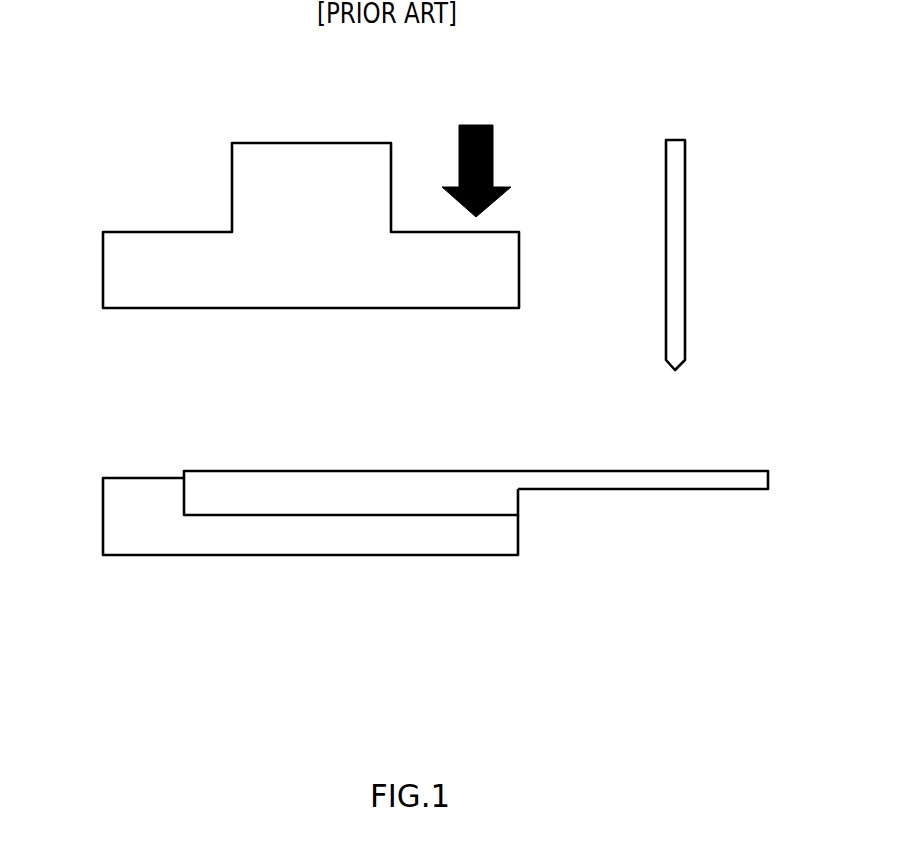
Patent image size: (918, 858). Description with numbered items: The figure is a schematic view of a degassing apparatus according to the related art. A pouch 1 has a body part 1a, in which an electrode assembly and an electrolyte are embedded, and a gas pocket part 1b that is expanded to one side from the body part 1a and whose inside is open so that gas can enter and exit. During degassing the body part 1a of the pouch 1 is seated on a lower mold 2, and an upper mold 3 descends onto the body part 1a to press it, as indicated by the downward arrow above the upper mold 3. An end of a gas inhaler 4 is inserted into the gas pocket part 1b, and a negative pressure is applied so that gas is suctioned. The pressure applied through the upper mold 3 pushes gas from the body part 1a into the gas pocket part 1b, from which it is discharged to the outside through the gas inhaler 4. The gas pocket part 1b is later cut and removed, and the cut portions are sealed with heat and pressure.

The pouch 1 is at (476, 438).
The body part 1a is at (335, 497).
The gas pocket part 1b is at (643, 482).
The lower mold 2 is at (243, 537).
The upper mold 3 is at (162, 245).
The gas inhaler 4 is at (677, 246).